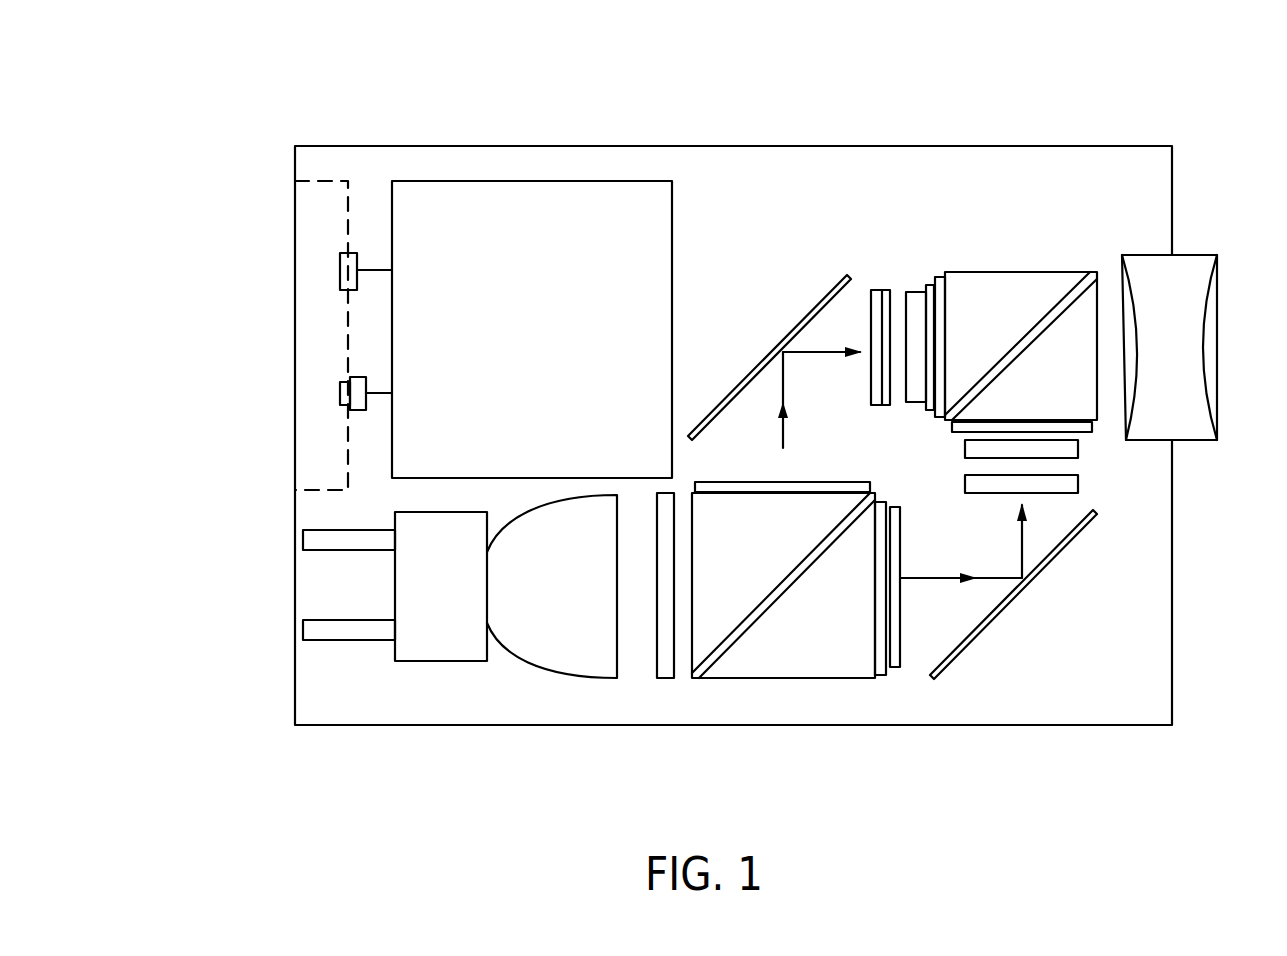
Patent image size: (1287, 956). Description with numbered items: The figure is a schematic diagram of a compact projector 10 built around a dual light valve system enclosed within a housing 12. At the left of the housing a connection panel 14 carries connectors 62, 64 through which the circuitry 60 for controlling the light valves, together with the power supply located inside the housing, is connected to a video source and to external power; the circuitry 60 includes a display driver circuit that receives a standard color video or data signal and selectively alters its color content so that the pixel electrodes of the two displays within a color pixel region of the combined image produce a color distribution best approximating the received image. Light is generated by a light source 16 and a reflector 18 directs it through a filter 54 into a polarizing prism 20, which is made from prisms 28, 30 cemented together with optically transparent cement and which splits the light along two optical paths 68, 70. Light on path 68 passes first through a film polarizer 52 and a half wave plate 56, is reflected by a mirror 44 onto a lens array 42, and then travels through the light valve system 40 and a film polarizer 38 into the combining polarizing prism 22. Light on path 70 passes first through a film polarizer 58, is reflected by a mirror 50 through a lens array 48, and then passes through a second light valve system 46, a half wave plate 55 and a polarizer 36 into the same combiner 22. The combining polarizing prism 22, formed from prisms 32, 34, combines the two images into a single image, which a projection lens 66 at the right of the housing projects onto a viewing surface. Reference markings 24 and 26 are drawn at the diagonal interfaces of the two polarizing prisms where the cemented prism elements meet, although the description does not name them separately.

The compact projector 10 is at (733, 374).
The housing 12 is at (466, 147).
The connection panel 14 is at (278, 315).
The light source 16 is at (438, 667).
The reflector 18 is at (560, 668).
The polarizing prism 20 is at (763, 646).
The combining polarizing prism 22 is at (1041, 304).
The polarizing interface of first beam splitter 24 is at (692, 673).
The polarizing interface of second beam splitter 26 is at (1093, 275).
The prism 28 is at (801, 625).
The prism 30 is at (742, 552).
The prism 32 is at (968, 336).
The prism 34 is at (1029, 393).
The polarizer 36 is at (938, 278).
The film polarizer 38 is at (1093, 425).
The light valve system 40 is at (963, 450).
The lens array 42 is at (1078, 483).
The mirror 44 is at (1015, 598).
The second light valve system 46 is at (928, 285).
The lens array 48 is at (873, 287).
The mirror 50 is at (752, 365).
The film polarizer 52 is at (885, 677).
The filter 54 is at (661, 680).
The half wave plate 55 is at (912, 290).
The half wave plate 56 is at (900, 670).
The film polarizer 58 is at (685, 490).
The circuitry 60 is at (512, 321).
The connector 62 is at (350, 393).
The connector 64 is at (340, 268).
The projection lens 66 is at (1197, 253).
The optical path 68 is at (947, 575).
The optical path 70 is at (832, 357).